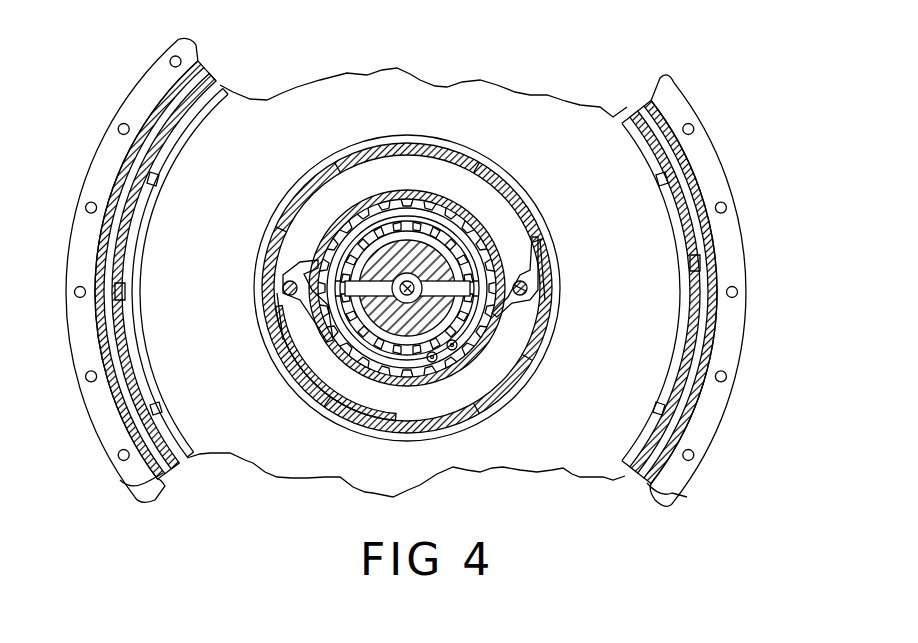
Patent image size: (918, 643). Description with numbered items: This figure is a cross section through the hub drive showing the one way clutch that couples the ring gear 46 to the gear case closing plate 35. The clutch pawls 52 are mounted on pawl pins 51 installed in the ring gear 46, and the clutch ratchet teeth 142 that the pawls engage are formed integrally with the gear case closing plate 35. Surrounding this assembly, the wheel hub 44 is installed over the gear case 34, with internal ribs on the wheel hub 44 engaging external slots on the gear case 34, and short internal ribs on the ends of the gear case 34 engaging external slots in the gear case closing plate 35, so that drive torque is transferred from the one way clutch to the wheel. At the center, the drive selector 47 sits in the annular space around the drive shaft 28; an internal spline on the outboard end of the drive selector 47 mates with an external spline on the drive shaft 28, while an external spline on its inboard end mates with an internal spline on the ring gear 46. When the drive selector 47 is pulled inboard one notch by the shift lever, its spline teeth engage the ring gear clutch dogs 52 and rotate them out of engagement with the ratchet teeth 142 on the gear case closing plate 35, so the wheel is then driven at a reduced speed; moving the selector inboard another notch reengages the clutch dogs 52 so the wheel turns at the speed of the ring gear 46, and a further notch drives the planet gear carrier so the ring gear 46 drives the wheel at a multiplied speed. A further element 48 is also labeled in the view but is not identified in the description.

The drive shaft 28 is at (433, 307).
The gear case 34 is at (720, 262).
The gear case closing plate 35 is at (497, 83).
The wheel hub 44 is at (718, 235).
The ring gear 46 is at (470, 212).
The drive selector 47 is at (338, 220).
The roller bearing 48 is at (347, 248).
The pawl pin 51 is at (528, 292).
The clutch pawl 52 is at (520, 305).
The clutch ratchet teeth 142 is at (425, 158).